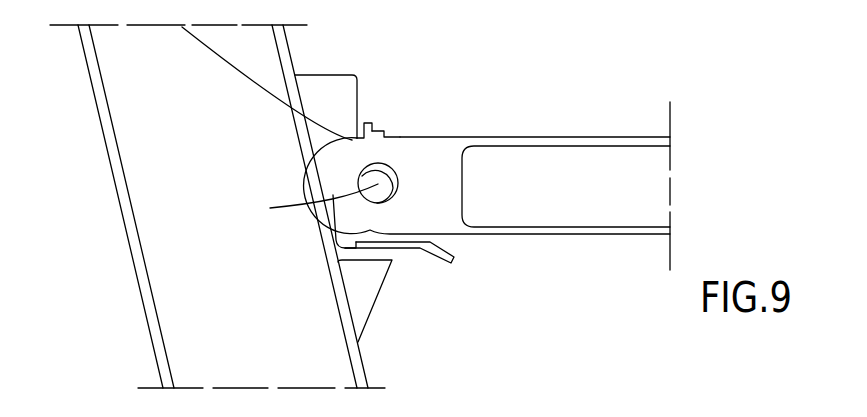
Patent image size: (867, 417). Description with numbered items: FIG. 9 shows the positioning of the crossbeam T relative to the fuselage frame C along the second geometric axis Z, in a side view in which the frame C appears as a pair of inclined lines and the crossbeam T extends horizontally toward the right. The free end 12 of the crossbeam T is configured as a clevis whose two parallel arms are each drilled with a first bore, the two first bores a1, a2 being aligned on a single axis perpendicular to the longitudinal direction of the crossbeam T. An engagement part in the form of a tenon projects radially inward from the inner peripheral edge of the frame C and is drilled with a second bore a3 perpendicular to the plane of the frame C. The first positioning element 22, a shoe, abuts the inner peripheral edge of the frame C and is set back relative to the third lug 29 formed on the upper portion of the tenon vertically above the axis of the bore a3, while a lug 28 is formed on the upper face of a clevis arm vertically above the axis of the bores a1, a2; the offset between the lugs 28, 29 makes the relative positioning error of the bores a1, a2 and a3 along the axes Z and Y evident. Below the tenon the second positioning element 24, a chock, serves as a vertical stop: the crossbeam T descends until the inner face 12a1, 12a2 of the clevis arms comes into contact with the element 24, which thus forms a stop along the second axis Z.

The fuselage frame C is at (90, 78).
The free end of the crossbeam 12 is at (330, 165).
The first positioning element 22 is at (326, 70).
The third lug 29 is at (366, 114).
The lug 28 is at (387, 112).
The crossbeam T is at (609, 137).
The first bore a1 is at (447, 134).
The first bore a2 is at (378, 184).
The second bore a3 is at (270, 208).
The second positioning element 24 is at (433, 260).
The inner face of the clevis arm 12a1 is at (417, 289).
The second bracket arm 12a2 is at (365, 301).